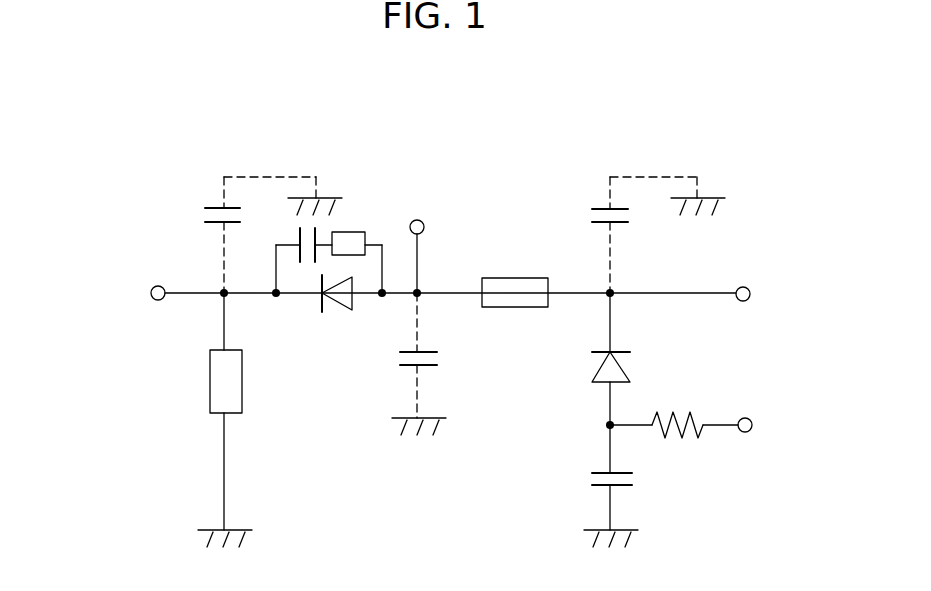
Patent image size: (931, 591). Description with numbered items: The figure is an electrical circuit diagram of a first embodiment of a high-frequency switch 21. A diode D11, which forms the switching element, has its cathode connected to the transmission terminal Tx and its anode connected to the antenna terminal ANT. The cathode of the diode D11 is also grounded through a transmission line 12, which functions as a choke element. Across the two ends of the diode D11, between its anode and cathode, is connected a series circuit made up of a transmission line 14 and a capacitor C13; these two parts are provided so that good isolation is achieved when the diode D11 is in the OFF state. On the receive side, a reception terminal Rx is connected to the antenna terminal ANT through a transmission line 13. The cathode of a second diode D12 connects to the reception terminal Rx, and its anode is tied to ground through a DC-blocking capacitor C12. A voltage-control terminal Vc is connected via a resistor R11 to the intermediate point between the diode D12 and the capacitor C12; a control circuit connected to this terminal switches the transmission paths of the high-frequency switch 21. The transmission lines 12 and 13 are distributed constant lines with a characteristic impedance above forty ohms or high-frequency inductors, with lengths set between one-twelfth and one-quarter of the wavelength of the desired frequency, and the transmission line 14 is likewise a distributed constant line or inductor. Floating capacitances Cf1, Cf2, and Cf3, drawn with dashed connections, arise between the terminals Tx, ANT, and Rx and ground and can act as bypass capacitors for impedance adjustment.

The high-frequency switch 21 is at (215, 138).
The transmission terminal Tx is at (152, 299).
The floating capacitance Cf1 is at (215, 208).
The transmission line 12 is at (242, 385).
The capacitor C13 is at (300, 235).
The transmission line 14 is at (352, 232).
The diode D11 is at (333, 312).
The antenna terminal ANT is at (425, 225).
The floating capacitance Cf2 is at (423, 367).
The transmission line 13 is at (507, 307).
The floating capacitance Cf3 is at (602, 207).
The reception terminal Rx is at (743, 301).
The diode D12 is at (593, 362).
The DC-blocking capacitor C12 is at (602, 470).
The resistor R11 is at (668, 433).
The voltage-control terminal Vc is at (750, 432).